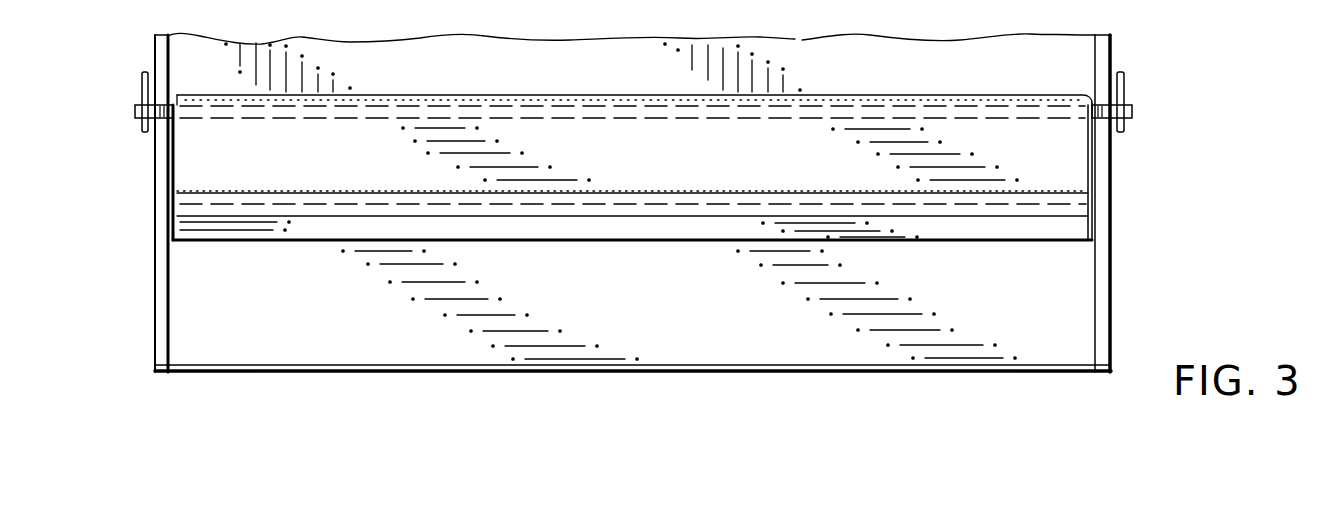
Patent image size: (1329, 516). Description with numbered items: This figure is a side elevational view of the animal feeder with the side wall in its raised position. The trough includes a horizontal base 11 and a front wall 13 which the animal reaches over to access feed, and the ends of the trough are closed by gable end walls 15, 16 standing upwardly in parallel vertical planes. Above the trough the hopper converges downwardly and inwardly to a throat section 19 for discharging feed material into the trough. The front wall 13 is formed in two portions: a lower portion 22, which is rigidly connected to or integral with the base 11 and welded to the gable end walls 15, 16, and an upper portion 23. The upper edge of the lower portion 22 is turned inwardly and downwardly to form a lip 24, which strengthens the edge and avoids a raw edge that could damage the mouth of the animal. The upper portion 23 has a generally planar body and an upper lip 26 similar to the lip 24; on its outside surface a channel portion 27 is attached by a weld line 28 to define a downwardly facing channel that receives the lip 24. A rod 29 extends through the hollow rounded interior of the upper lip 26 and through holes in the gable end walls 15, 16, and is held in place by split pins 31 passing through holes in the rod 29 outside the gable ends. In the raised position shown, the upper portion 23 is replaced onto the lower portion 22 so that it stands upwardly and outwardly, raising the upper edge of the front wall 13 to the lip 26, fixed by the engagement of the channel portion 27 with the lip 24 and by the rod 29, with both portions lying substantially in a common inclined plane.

The horizontal base 11 is at (741, 373).
The front wall 13 is at (648, 223).
The gable end wall 15 is at (154, 248).
The gable end wall 16 is at (1112, 274).
The throat section 19 is at (389, 58).
The lower portion 22 is at (412, 340).
The upper portion 23 is at (632, 173).
The lip 24 is at (378, 203).
The upper lip 26 is at (819, 86).
The channel portion 27 is at (531, 228).
The weld line 28 is at (726, 184).
The rod 29 is at (135, 118).
The split pin 31 is at (141, 78).